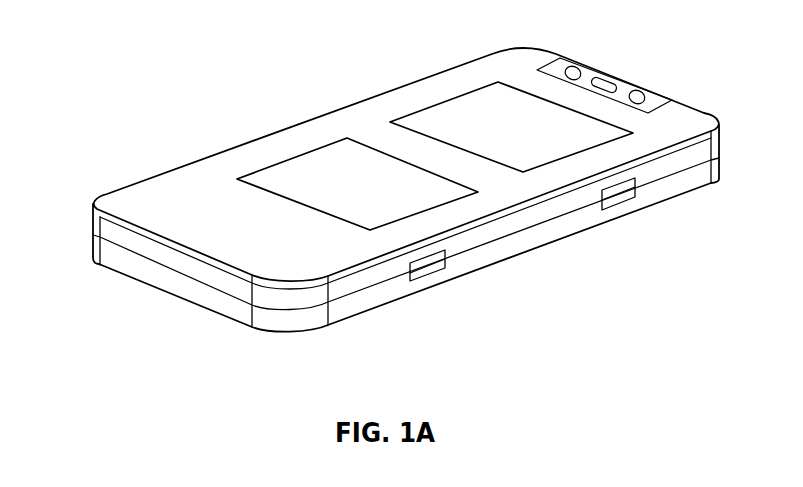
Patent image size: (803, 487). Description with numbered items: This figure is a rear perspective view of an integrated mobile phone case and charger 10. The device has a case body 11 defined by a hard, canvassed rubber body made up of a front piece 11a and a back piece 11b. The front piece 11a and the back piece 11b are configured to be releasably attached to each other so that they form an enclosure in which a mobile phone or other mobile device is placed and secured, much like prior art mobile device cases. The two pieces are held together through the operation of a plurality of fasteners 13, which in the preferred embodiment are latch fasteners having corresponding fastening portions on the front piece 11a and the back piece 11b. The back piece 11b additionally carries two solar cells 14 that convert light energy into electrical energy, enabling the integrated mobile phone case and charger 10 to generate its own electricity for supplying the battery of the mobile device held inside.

The integrated mobile phone case and charger 10 is at (117, 42).
The case body 11 is at (552, 51).
The front piece 11a is at (113, 265).
The back piece 11b is at (107, 234).
The fasteners 13 is at (430, 270).
The solar cells 14 is at (283, 162).